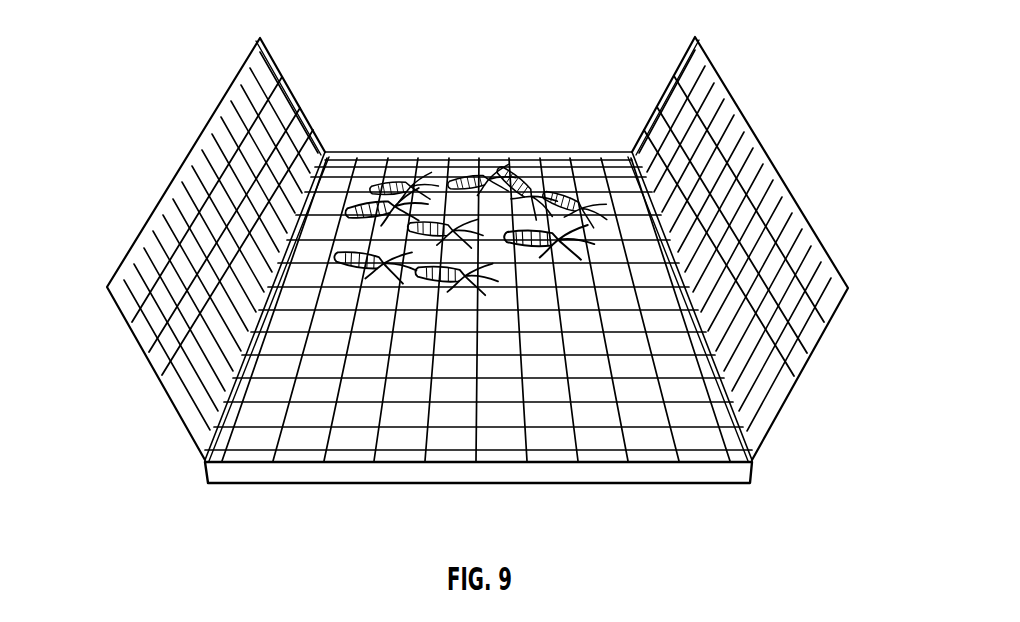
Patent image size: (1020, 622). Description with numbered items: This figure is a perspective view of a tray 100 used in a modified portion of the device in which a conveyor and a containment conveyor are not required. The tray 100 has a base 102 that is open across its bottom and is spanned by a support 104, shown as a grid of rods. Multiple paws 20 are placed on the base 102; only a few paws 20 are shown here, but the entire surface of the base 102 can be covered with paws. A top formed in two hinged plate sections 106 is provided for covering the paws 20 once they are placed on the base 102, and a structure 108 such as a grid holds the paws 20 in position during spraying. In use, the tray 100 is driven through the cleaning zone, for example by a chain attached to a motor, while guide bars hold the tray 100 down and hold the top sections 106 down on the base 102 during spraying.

The tray 100 is at (473, 284).
The paws 20 is at (503, 190).
The base 102 is at (327, 475).
The support 104 is at (474, 415).
The hinged plate sections 106 is at (150, 373).
The structure 108 is at (163, 253).